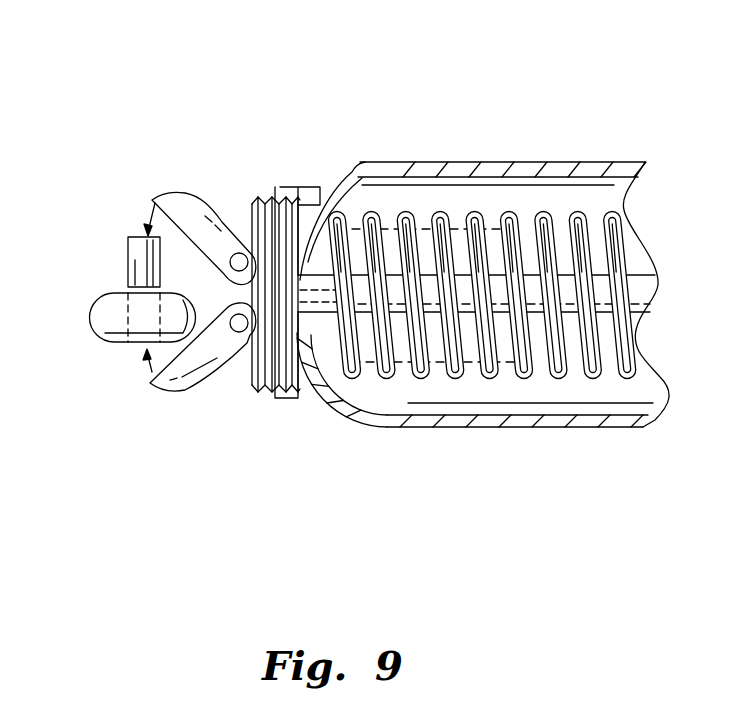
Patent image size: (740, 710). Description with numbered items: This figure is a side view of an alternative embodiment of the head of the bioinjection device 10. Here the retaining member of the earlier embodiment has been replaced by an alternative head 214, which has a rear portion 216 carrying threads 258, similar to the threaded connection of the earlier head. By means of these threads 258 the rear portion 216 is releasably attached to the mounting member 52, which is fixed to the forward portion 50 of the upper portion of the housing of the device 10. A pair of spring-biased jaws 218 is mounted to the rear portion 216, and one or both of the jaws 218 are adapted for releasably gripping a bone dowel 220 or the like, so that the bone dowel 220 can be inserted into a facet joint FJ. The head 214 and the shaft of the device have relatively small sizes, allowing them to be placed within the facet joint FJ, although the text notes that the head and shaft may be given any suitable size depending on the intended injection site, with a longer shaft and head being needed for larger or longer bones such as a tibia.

The bioinjection device 10 is at (573, 95).
The forward portion 50 is at (362, 170).
The mounting member 52 is at (293, 190).
The alternative head 214 is at (145, 403).
The rear portion 216 is at (328, 368).
The spring-biased jaws 218 is at (167, 195).
The bone dowel 220 is at (128, 250).
The threads 258 is at (262, 387).
The facet joint FJ is at (103, 333).